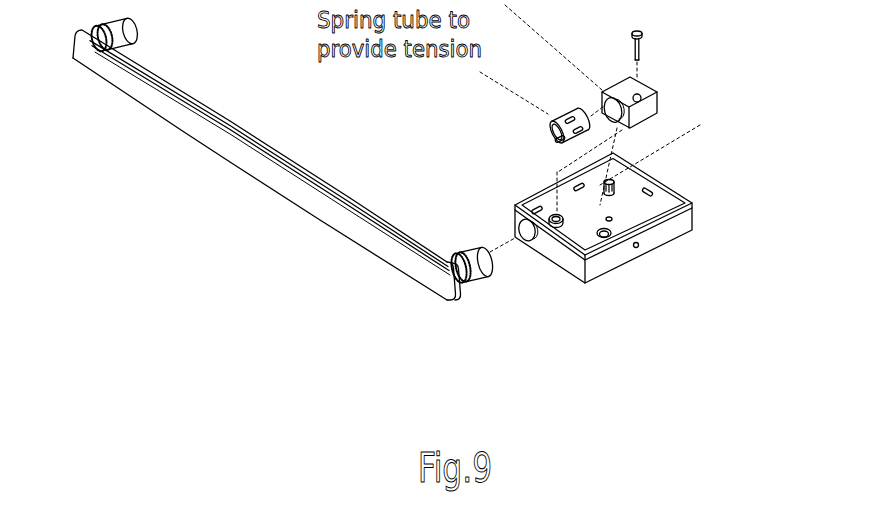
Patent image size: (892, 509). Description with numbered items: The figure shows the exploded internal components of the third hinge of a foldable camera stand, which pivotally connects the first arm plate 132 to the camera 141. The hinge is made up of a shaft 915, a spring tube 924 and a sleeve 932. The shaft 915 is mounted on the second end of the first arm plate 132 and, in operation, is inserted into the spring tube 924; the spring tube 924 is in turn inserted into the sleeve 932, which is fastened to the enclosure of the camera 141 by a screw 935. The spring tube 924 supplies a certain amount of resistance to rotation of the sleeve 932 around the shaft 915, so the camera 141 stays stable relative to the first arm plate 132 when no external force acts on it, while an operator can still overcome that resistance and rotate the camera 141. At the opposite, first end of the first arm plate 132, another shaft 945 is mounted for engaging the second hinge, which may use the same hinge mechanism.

The first arm plate 132 is at (240, 152).
The shaft 945 is at (128, 33).
The shaft 915 is at (472, 265).
The spring tube 924 is at (550, 132).
The sleeve 932 is at (650, 103).
The screw 935 is at (643, 33).
The camera 141 is at (622, 255).